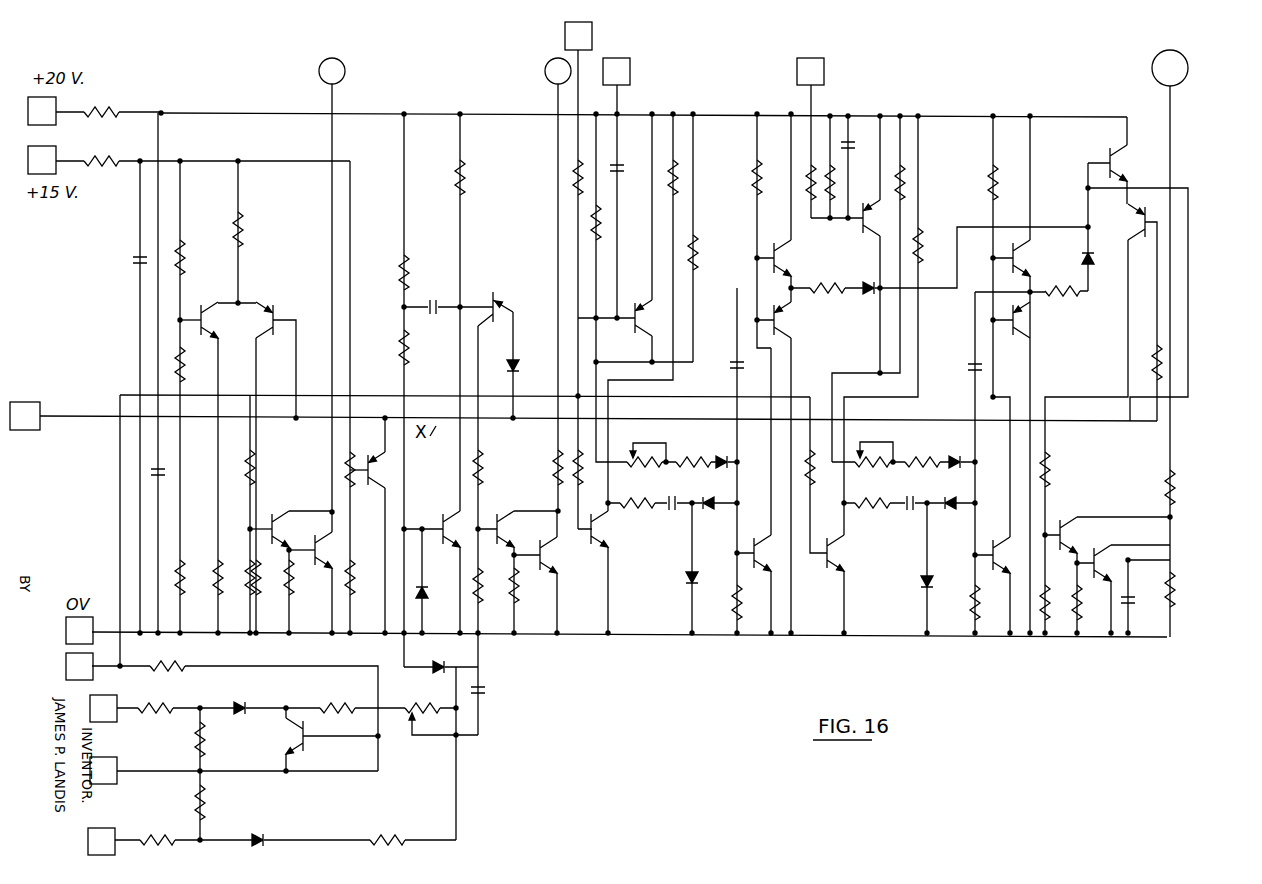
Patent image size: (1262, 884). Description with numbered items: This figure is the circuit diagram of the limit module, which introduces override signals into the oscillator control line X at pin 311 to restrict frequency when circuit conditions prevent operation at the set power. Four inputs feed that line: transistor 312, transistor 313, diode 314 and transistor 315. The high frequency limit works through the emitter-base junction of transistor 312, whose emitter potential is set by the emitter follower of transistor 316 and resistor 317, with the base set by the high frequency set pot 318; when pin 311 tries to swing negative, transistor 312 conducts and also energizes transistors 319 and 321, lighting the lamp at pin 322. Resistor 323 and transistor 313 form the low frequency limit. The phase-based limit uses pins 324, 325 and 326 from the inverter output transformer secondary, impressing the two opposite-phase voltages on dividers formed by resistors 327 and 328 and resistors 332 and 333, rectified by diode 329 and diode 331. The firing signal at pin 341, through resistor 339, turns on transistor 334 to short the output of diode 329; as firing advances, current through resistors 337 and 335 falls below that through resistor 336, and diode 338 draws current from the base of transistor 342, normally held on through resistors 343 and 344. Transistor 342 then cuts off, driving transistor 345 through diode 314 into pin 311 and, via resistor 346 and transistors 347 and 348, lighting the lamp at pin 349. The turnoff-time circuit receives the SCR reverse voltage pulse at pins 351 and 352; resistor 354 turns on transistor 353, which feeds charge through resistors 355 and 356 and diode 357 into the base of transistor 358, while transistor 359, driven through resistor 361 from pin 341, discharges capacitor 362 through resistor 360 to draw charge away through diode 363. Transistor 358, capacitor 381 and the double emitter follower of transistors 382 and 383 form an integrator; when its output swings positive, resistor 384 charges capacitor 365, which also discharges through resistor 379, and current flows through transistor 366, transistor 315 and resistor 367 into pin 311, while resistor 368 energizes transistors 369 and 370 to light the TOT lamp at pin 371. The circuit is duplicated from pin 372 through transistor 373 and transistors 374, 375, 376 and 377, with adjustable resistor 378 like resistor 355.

The pin 311 is at (40, 412).
The transistor 312 is at (273, 305).
The transistor 313 is at (368, 452).
The diode 314 is at (513, 358).
The transistor 315 is at (1142, 224).
The transistor 316 is at (199, 302).
The resistor 317 is at (243, 230).
The high frequency set pot 318 is at (176, 362).
The transistor 319 is at (272, 512).
The transistor 321 is at (318, 552).
The pin 322 is at (345, 71).
The resistor 323 is at (345, 456).
The pin 324 is at (113, 833).
The pin 325 is at (117, 780).
The pin 326 is at (117, 718).
The resistor 327 is at (170, 701).
The resistor 328 is at (207, 740).
The diode 329 is at (242, 701).
The diode 331 is at (262, 836).
The resistor 332 is at (175, 851).
The resistor 333 is at (207, 800).
The transistor 334 is at (303, 746).
The potentiometer 335 is at (425, 722).
The resistor 336 is at (392, 838).
The resistor 337 is at (350, 703).
The diode 338 is at (446, 671).
The resistor 339 is at (185, 661).
The pin 341 is at (93, 676).
The transistor 342 is at (443, 514).
The resistor 343 is at (409, 272).
The resistor 344 is at (409, 342).
The transistor 345 is at (496, 298).
The resistor 346 is at (473, 462).
The transistor 347 is at (498, 513).
The transistor 348 is at (557, 568).
The pin 349 is at (545, 71).
The pin 351 is at (630, 70).
The pin 352 is at (592, 32).
The transistor 353 is at (633, 330).
The resistor 354 is at (575, 182).
The resistor 355 is at (633, 450).
The resistor 356 is at (694, 468).
The diode 357 is at (722, 455).
The transistor 358 is at (752, 538).
The transistor 359 is at (610, 560).
The resistor 360 is at (633, 512).
The resistor 361 is at (553, 462).
The capacitor 362 is at (672, 512).
The diode 363 is at (708, 512).
The capacitor 365 is at (866, 281).
The transistor 366 is at (1108, 158).
The resistor 367 is at (1162, 365).
The resistor 368 is at (1052, 465).
The transistor 369 is at (1060, 520).
The transistor 370 is at (1094, 548).
The pin 371 is at (1152, 68).
The pin 372 is at (824, 72).
The transistor 373 is at (860, 226).
The transistor 374 is at (830, 554).
The transistor 375 is at (990, 548).
The transistor 376 is at (1018, 325).
The transistor 377 is at (1020, 265).
The resistor 378 is at (876, 455).
The resistor 379 is at (1175, 586).
The capacitor 381 is at (733, 360).
The transistor 382 is at (778, 258).
The transistor 383 is at (778, 321).
The resistor 384 is at (828, 294).